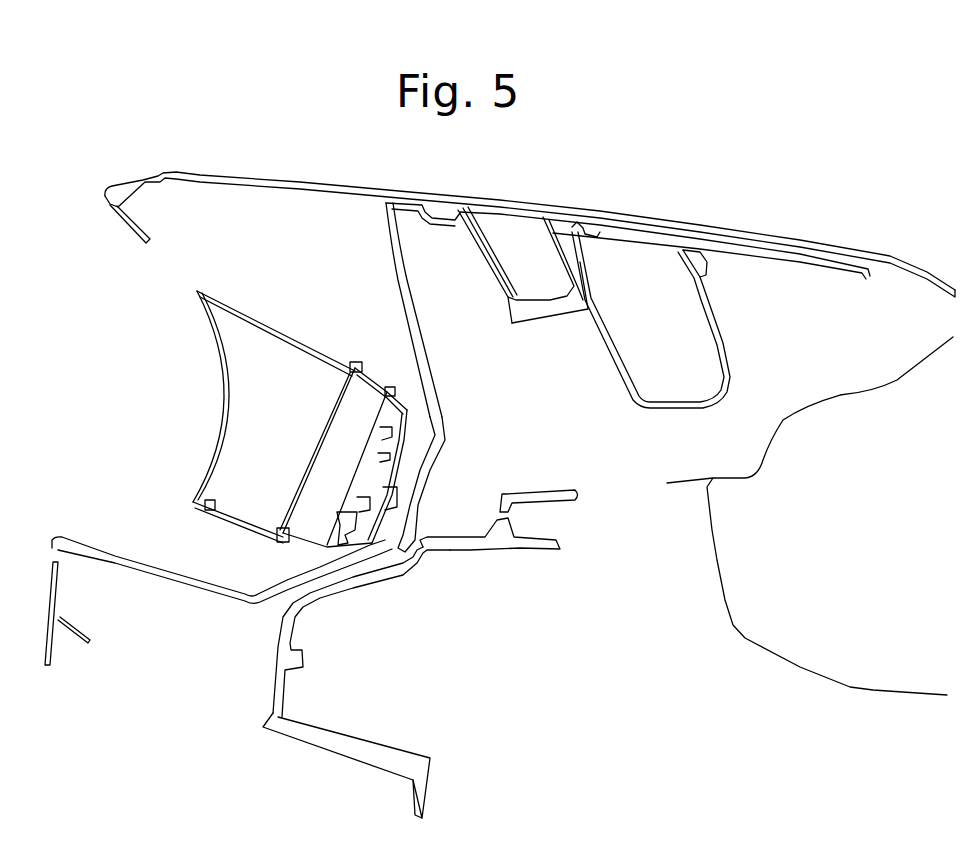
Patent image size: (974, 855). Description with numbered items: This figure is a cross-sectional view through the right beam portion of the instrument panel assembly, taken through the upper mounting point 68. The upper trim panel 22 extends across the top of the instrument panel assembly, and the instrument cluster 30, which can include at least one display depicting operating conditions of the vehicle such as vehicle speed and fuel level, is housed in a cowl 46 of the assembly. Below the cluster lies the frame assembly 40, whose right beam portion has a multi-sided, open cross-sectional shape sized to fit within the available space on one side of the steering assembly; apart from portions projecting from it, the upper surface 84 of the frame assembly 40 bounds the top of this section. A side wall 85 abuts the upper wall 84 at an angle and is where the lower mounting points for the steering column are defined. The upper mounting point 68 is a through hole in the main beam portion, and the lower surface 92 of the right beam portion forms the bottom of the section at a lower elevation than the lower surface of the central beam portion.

The upper trim panel 22 is at (197, 175).
The cowl 46 is at (727, 335).
The instrument cluster 30 is at (160, 362).
The upper wall 84 is at (465, 537).
The upper mounting point 68 is at (505, 493).
The side wall 85 is at (288, 655).
The frame assembly 40 is at (346, 752).
The lower surface 92 is at (328, 752).